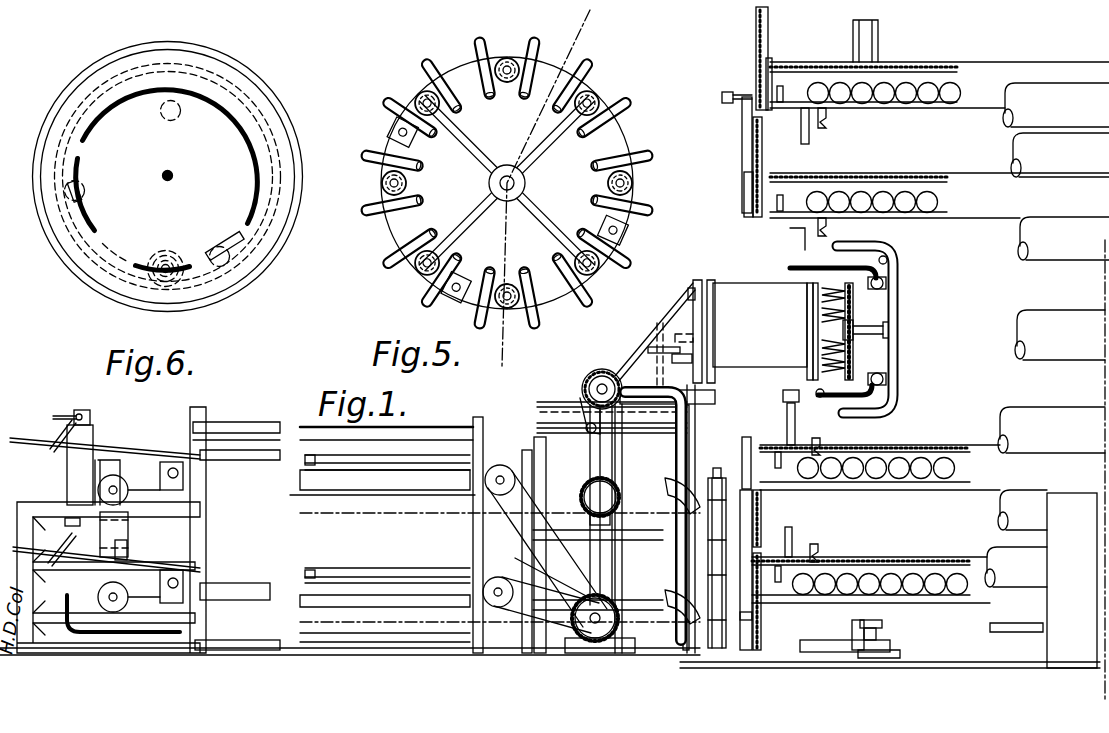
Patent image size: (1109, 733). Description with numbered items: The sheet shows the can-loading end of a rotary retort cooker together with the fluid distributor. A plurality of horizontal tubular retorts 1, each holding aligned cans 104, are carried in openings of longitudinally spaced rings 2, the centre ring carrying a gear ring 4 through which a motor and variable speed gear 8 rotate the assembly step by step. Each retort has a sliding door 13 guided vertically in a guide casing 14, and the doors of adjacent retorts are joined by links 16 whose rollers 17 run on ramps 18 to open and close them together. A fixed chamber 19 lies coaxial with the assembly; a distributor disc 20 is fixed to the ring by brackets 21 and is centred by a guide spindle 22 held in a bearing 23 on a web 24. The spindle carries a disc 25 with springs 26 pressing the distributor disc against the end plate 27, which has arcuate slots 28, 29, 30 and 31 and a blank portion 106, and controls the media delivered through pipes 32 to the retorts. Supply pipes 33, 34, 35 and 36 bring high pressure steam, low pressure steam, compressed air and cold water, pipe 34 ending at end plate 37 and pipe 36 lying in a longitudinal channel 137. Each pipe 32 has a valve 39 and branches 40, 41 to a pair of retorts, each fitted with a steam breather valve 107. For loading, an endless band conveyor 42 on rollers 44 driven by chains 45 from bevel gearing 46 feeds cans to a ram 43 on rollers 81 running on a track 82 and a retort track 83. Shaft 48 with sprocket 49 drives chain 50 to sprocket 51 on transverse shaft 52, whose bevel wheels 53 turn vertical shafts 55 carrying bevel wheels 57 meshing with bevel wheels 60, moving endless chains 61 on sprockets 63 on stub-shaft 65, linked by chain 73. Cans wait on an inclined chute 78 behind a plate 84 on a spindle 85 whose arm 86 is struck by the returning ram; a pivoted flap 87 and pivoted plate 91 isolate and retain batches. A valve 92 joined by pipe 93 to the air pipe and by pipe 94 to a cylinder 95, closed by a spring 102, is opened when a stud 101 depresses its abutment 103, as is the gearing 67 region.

In FIG. 1, the tubular retort 1 is at (1050, 140).
In FIG. 1, the ring 2 is at (878, 28).
In FIG. 5, the gear ring 4 is at (588, 19).
In FIG. 1, the variable speed gear 8 is at (1072, 580).
In FIG. 1, the door 13 is at (766, 68).
In FIG. 1, the guide casing 14 is at (756, 18).
In FIG. 1, the link 16 is at (742, 120).
In FIG. 1, the roller 17 is at (724, 92).
In FIG. 1, the ramp 18 is at (708, 600).
In FIG. 6, the fixed chamber 19 is at (110, 250).
In FIG. 1, the fixed chamber 19 is at (725, 283).
In FIG. 1, the distributor disc 20 is at (807, 295).
In FIG. 1, the bracket 21 is at (800, 268).
In FIG. 6, the guide spindle 22 is at (171, 172).
In FIG. 1, the guide spindle 22 is at (896, 330).
In FIG. 1, the bearing 23 is at (893, 340).
In FIG. 1, the web 24 is at (896, 304).
In FIG. 5, the disc 25 is at (633, 132).
In FIG. 1, the disc 25 is at (858, 345).
In FIG. 1, the spring 26 is at (822, 316).
In FIG. 6, the end plate 27 is at (212, 60).
In FIG. 1, the end plate 27 is at (813, 350).
In FIG. 6, the arcuate slot 28 is at (83, 222).
In FIG. 6, the arcuate slot 29 is at (245, 122).
In FIG. 6, the arcuate slot 30 is at (238, 236).
In FIG. 6, the arcuate slot 31 is at (184, 264).
In FIG. 5, the pipe 32 is at (540, 37).
In FIG. 1, the pipe 32 is at (890, 260).
In FIG. 6, the pipe 33 is at (83, 186).
In FIG. 1, the pipe 33 is at (700, 330).
In FIG. 6, the pipe 34 is at (178, 113).
In FIG. 1, the pipe 34 is at (692, 289).
In FIG. 6, the pipe 35 is at (230, 262).
In FIG. 1, the pipe 35 is at (660, 323).
In FIG. 6, the pipe 36 is at (162, 278).
In FIG. 1, the pipe 36 is at (694, 357).
In FIG. 6, the end plate 37 is at (135, 40).
In FIG. 1, the valve 39 is at (886, 283).
In FIG. 1, the branch 40 is at (790, 228).
In FIG. 1, the branch 41 is at (801, 128).
In FIG. 1, the endless band conveyor 42 is at (335, 490).
In FIG. 1, the ram 43 is at (262, 583).
In FIG. 1, the roller 44 is at (500, 465).
In FIG. 1, the chain 45 is at (532, 588).
In FIG. 1, the bevel gearing 46 is at (612, 608).
In FIG. 1, the shaft 48 is at (266, 440).
In FIG. 1, the sprocket 49 is at (576, 596).
In FIG. 1, the chain 50 is at (588, 425).
In FIG. 1, the sprocket 51 is at (600, 383).
In FIG. 1, the transverse shaft 52 is at (606, 371).
In FIG. 1, the bevel wheel 53 is at (590, 380).
In FIG. 1, the vertical shaft 55 is at (545, 570).
In FIG. 1, the bevel wheel 57 is at (592, 505).
In FIG. 1, the bevel wheel 60 is at (598, 480).
In FIG. 1, the endless chain 61 is at (328, 620).
In FIG. 1, the sprocket 63 is at (128, 490).
In FIG. 1, the stub-shaft 65 is at (115, 497).
In FIG. 1, the pipe 67 is at (108, 462).
In FIG. 1, the chain 73 is at (122, 572).
In FIG. 1, the inclined chute 78 is at (35, 441).
In FIG. 1, the roller 81 is at (420, 466).
In FIG. 1, the track 82 is at (688, 490).
In FIG. 1, the track 83 is at (833, 62).
In FIG. 1, the plate 84 is at (80, 410).
In FIG. 1, the spindle 85 is at (88, 414).
In FIG. 1, the arm 86 is at (62, 436).
In FIG. 1, the pivoted flap 87 is at (622, 470).
In FIG. 1, the pivoted plate 91 is at (780, 86).
In FIG. 1, the valve 92 is at (855, 640).
In FIG. 1, the pipe 93 is at (683, 520).
In FIG. 1, the pipe 94 is at (240, 648).
In FIG. 1, the cylinder 95 is at (70, 485).
In FIG. 1, the stud 101 is at (882, 624).
In FIG. 1, the spring 102 is at (900, 652).
In FIG. 1, the abutment 103 is at (876, 636).
In FIG. 1, the can 104 is at (948, 98).
In FIG. 6, the blank portion 106 is at (112, 248).
In FIG. 1, the steam breather valve 107 is at (848, 112).
In FIG. 6, the longitudinal channel 137 is at (140, 266).